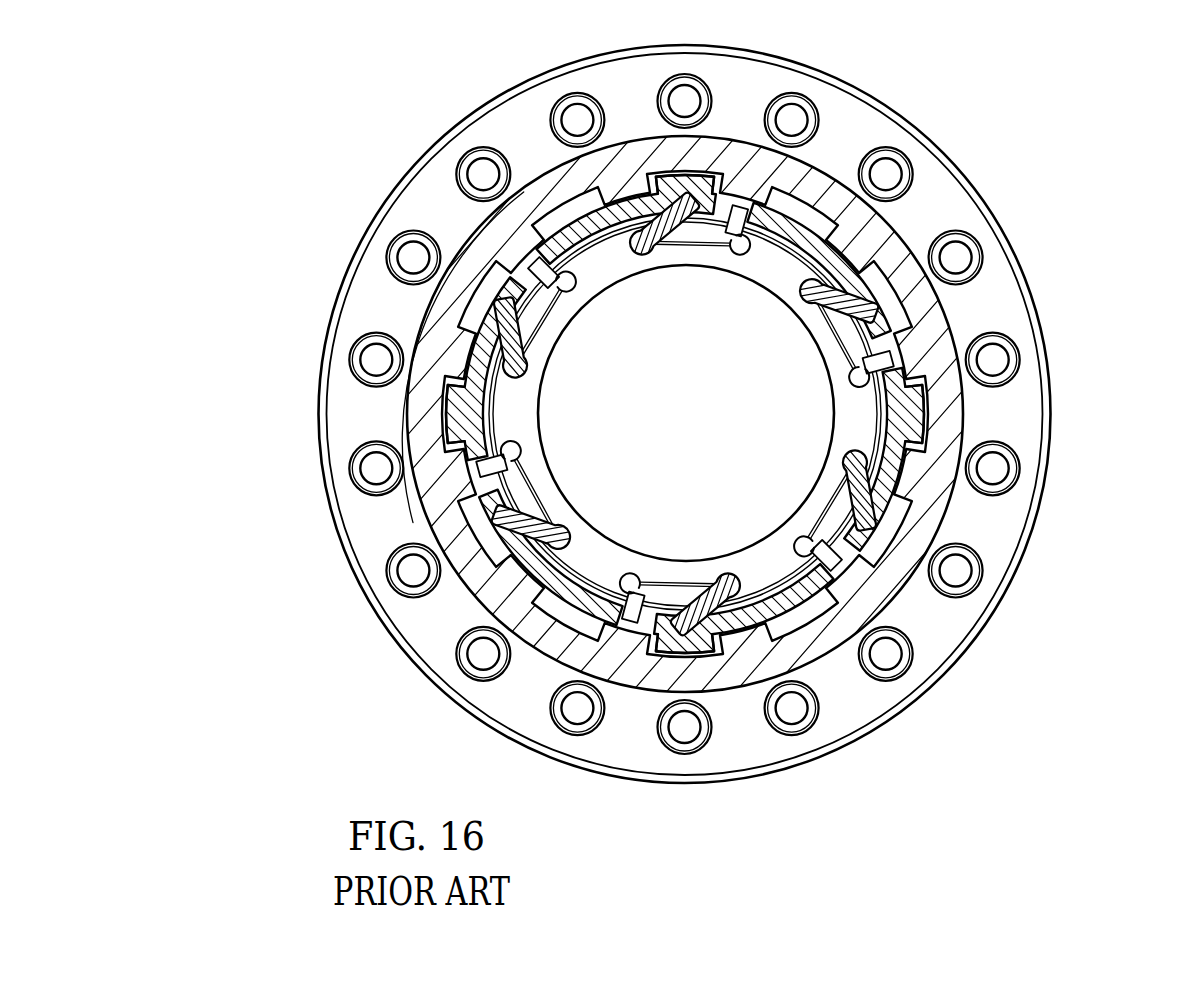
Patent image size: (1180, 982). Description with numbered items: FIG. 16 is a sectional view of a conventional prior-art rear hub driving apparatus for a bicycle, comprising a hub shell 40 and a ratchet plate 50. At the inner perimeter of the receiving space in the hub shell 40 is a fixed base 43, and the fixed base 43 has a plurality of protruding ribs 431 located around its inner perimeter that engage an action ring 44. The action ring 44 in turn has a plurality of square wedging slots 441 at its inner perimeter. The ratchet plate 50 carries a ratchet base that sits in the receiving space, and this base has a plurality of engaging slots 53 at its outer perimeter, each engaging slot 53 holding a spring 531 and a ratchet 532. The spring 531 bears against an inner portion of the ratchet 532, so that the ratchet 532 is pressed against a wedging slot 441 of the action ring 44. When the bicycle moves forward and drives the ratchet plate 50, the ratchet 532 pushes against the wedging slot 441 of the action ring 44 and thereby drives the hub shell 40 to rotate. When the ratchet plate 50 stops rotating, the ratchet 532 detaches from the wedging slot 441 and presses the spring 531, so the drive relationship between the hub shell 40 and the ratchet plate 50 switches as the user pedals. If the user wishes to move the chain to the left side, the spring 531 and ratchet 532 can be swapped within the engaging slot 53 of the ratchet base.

The hub shell 40 is at (382, 308).
The fixed base 43 is at (477, 528).
The protruding ribs 431 is at (540, 582).
The action ring 44 is at (540, 582).
The wedging slots 441 is at (872, 303).
The ratchet plate 50 is at (590, 413).
The engaging slots 53 is at (912, 382).
The spring 531 is at (880, 319).
The ratchet 532 is at (858, 274).